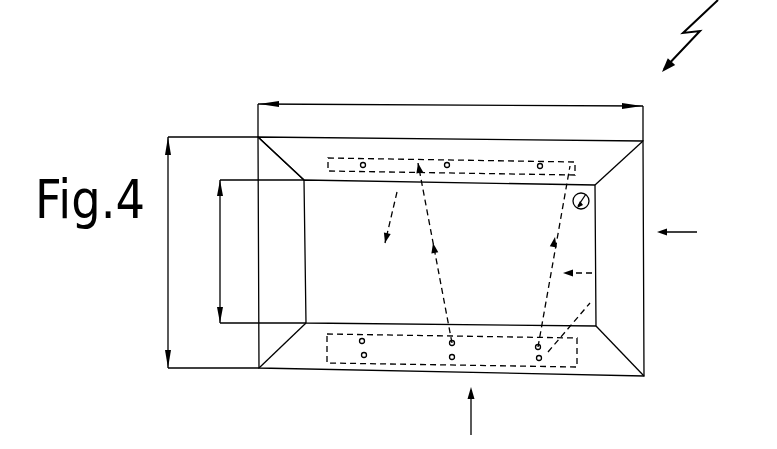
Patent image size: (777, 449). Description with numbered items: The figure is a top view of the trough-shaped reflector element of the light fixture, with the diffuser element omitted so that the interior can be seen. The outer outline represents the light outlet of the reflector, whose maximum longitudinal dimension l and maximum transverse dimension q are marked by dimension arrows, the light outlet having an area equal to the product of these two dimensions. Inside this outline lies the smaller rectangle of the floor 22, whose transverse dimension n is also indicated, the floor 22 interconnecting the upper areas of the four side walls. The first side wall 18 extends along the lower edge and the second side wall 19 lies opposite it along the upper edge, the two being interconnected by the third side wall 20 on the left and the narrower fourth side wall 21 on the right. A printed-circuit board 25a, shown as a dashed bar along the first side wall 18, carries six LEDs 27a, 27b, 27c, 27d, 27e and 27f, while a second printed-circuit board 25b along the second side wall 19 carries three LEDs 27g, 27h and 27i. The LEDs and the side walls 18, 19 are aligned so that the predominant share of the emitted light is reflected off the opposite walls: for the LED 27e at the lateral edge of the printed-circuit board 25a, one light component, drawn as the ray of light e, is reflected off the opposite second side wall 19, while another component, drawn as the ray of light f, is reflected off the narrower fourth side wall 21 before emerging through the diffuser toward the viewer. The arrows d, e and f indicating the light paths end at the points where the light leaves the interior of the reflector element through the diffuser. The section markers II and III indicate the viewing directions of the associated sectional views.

The first side wall 18 is at (247, 381).
The second side wall 19 is at (301, 147).
The third side wall 20 is at (374, 256).
The fourth side wall 21 is at (628, 164).
The floor 22 is at (512, 235).
The printed-circuit board 25a is at (451, 387).
The printed-circuit board 25b is at (455, 109).
The LED 27a is at (294, 390).
The LED 27b is at (321, 397).
The LED 27c is at (416, 392).
The LED 27d is at (448, 399).
The LED 27e is at (545, 395).
The LED 27f is at (582, 401).
The LED 27g is at (302, 103).
The LED 27h is at (485, 106).
The LED 27i is at (594, 106).
The ray of light d is at (401, 199).
The ray of light e is at (613, 249).
The ray of light f is at (617, 307).
The maximum longitudinal dimension l is at (448, 97).
The transverse dimension n is at (255, 251).
The maximum transverse dimension q is at (205, 252).
The section line II is at (691, 232).
The section line III is at (490, 411).